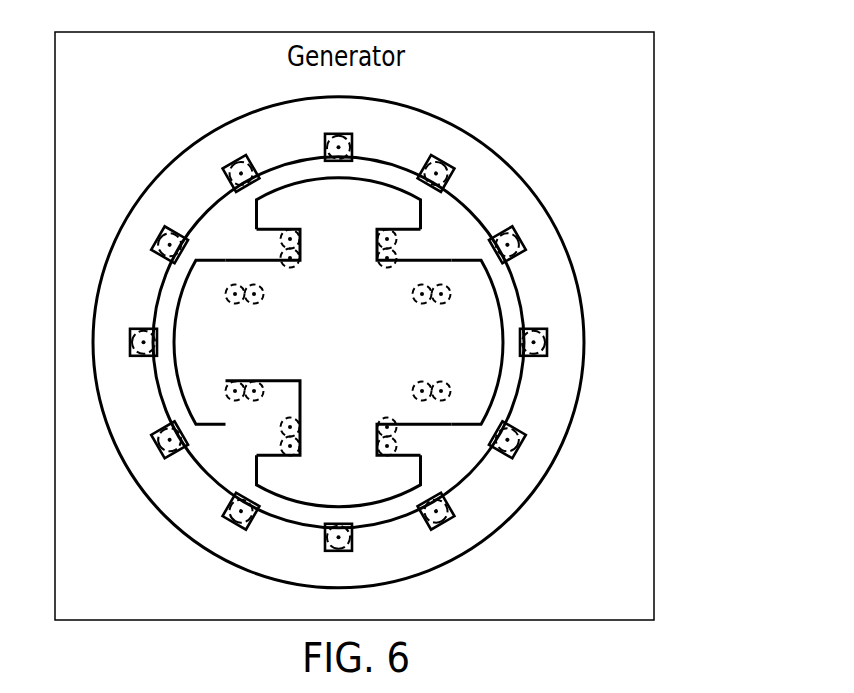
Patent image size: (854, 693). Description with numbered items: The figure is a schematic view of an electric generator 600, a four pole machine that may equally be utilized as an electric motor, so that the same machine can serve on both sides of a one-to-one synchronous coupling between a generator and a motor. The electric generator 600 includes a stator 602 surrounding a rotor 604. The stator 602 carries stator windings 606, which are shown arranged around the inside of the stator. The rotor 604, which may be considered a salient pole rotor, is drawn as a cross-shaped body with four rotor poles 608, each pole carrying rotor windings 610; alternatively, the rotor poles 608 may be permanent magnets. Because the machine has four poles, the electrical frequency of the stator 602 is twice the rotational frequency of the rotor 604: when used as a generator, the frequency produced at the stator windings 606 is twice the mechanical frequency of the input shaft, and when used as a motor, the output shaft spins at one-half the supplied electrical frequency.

The electric generator 600 is at (654, 83).
The stator 602 is at (430, 127).
The rotor 604 is at (362, 293).
The stator windings 606 is at (512, 233).
The rotor poles 608 is at (213, 275).
The rotor windings 610 is at (440, 400).